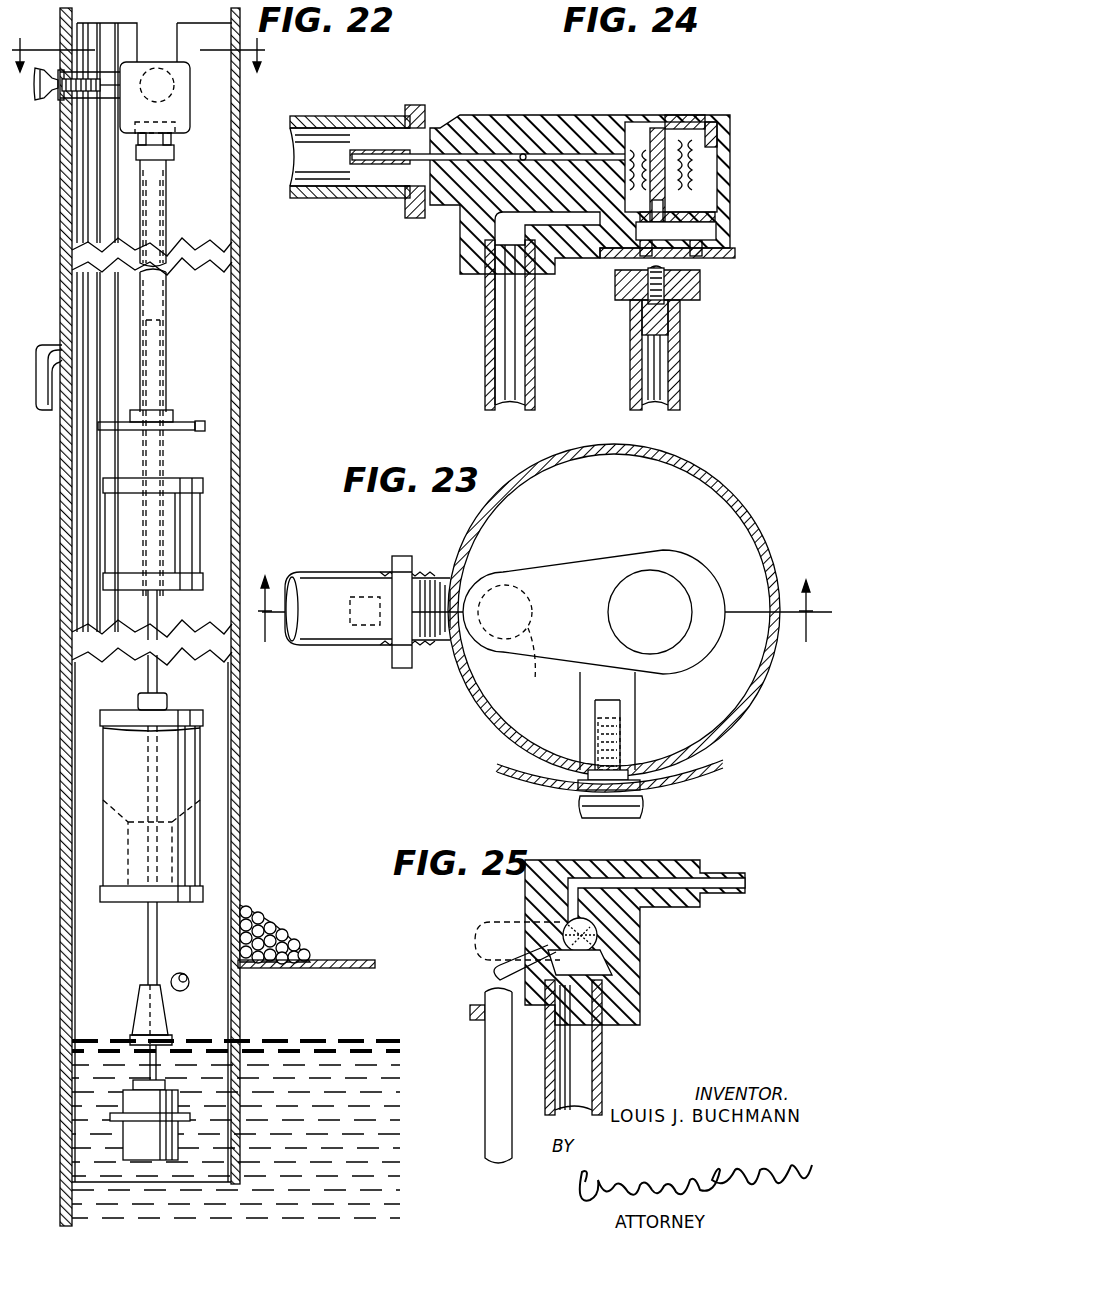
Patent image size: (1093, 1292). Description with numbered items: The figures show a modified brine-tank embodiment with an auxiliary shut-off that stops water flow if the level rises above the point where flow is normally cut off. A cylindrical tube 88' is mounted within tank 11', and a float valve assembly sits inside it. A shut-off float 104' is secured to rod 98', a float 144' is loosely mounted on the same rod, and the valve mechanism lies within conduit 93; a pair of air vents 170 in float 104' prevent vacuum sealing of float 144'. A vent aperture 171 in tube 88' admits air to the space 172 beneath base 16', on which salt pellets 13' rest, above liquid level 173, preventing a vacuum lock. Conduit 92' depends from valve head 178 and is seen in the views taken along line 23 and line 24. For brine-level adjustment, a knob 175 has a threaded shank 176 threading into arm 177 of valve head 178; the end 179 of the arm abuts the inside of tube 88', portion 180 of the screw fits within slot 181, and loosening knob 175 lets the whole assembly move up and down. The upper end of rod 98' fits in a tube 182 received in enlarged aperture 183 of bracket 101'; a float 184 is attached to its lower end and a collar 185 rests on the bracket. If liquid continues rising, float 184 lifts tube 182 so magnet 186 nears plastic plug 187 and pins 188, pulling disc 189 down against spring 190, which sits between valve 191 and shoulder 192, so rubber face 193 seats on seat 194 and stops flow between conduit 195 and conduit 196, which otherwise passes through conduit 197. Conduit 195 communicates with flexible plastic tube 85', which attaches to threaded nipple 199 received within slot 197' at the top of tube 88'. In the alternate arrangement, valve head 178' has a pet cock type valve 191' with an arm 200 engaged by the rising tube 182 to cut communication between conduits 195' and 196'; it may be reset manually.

In FIG. 22, the tank 11' is at (48, 617).
In FIG. 23, the tank 11' is at (630, 776).
In FIG. 22, the cylindrical tube 88' is at (260, 596).
In FIG. 23, the cylindrical tube 88' is at (616, 610).
In FIG. 22, the section line 23— 23 is at (138, 66).
In FIG. 23, the section line 24— 24 is at (535, 612).
In FIG. 22, the knob 175 is at (40, 100).
In FIG. 23, the knob 175 is at (580, 813).
In FIG. 22, the threaded shank 176 is at (84, 72).
In FIG. 23, the threaded shank 176 is at (640, 748).
In FIG. 22, the arm 177 is at (78, 92).
In FIG. 23, the arm 177 is at (633, 732).
In FIG. 22, the valve head 178 is at (174, 97).
In FIG. 24, the valve head 178 is at (580, 169).
In FIG. 23, the valve head 178 is at (594, 583).
In FIG. 25, the valve head 178' is at (635, 942).
In FIG. 23, the end of arm 179 is at (588, 772).
In FIG. 23, the portion of adjusting screw 180 is at (578, 788).
In FIG. 22, the slot 181 is at (70, 140).
In FIG. 23, the slot 181 is at (640, 792).
In FIG. 22, the tube 182 is at (166, 310).
In FIG. 24, the tube 182 is at (682, 365).
In FIG. 25, the tube 182 is at (485, 1063).
In FIG. 22, the enlarged aperture 183 is at (170, 432).
In FIG. 22, the float 184 is at (200, 520).
In FIG. 22, the collar 185 is at (170, 412).
In FIG. 22, the magnet 186 is at (175, 152).
In FIG. 24, the magnet 186 is at (700, 275).
In FIG. 24, the plastic plug 187 is at (735, 253).
In FIG. 24, the pins 188 is at (696, 245).
In FIG. 24, the disc 189 is at (672, 218).
In FIG. 24, the spring 190 is at (668, 165).
In FIG. 24, the valve 191 is at (703, 98).
In FIG. 25, the pet cock type of valve 191' is at (639, 934).
In FIG. 24, the shoulder 192 is at (690, 185).
In FIG. 24, the rubber face 193 is at (648, 122).
In FIG. 24, the seat 194 is at (712, 135).
In FIG. 24, the conduit 195 is at (502, 113).
In FIG. 25, the conduit 195' is at (631, 973).
In FIG. 24, the conduit 196 is at (547, 254).
In FIG. 25, the conduit 196' is at (671, 883).
In FIG. 24, the conduit 197 is at (718, 186).
In FIG. 22, the slot 197' is at (168, 22).
In FIG. 23, the slot 197' is at (428, 642).
In FIG. 24, the threaded nipple 199 is at (448, 120).
In FIG. 25, the arm 200 is at (495, 972).
In FIG. 24, the flexible plastic tube 85' is at (350, 177).
In FIG. 23, the flexible plastic tube 85' is at (360, 626).
In FIG. 24, the conduit 92' is at (481, 325).
In FIG. 23, the conduit 92' is at (511, 640).
In FIG. 22, the bracket 101' is at (165, 413).
In FIG. 22, the shut-off float 104' is at (192, 778).
In FIG. 22, the air vents 170 is at (110, 818).
In FIG. 22, the vent aperture 171 is at (186, 975).
In FIG. 22, the space 172 is at (300, 1005).
In FIG. 22, the liquid level 173 is at (330, 1040).
In FIG. 22, the salt pellets 13' is at (284, 925).
In FIG. 22, the base 16' is at (306, 948).
In FIG. 22, the rod 98' is at (175, 943).
In FIG. 22, the float 144' is at (172, 1015).
In FIG. 22, the conduit 93 is at (178, 1150).